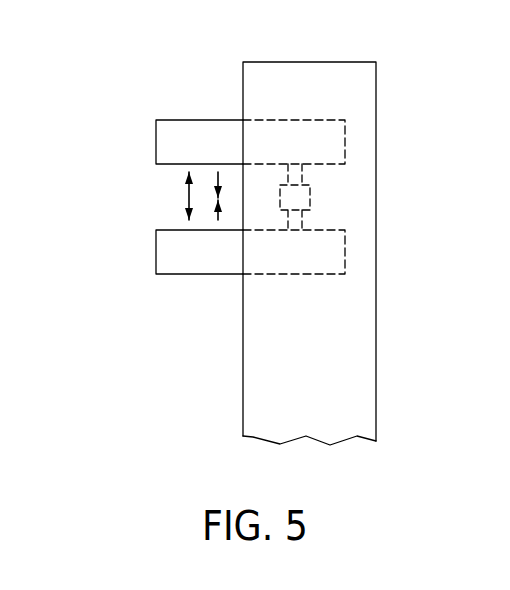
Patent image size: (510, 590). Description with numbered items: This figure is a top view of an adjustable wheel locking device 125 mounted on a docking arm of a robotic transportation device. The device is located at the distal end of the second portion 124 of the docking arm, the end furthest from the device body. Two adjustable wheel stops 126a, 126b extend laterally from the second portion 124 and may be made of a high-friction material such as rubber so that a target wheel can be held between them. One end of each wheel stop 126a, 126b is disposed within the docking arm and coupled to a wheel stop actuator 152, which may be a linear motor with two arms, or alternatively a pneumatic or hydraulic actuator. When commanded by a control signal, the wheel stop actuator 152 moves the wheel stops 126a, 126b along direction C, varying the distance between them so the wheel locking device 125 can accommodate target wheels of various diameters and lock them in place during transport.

The adjustable wheel locking device 125 is at (138, 62).
The second portion 124 is at (376, 377).
The first wheel stop 126a is at (156, 141).
The second wheel stop 126b is at (156, 252).
The wheel stop actuator 152 is at (310, 202).
The direction C is at (163, 195).